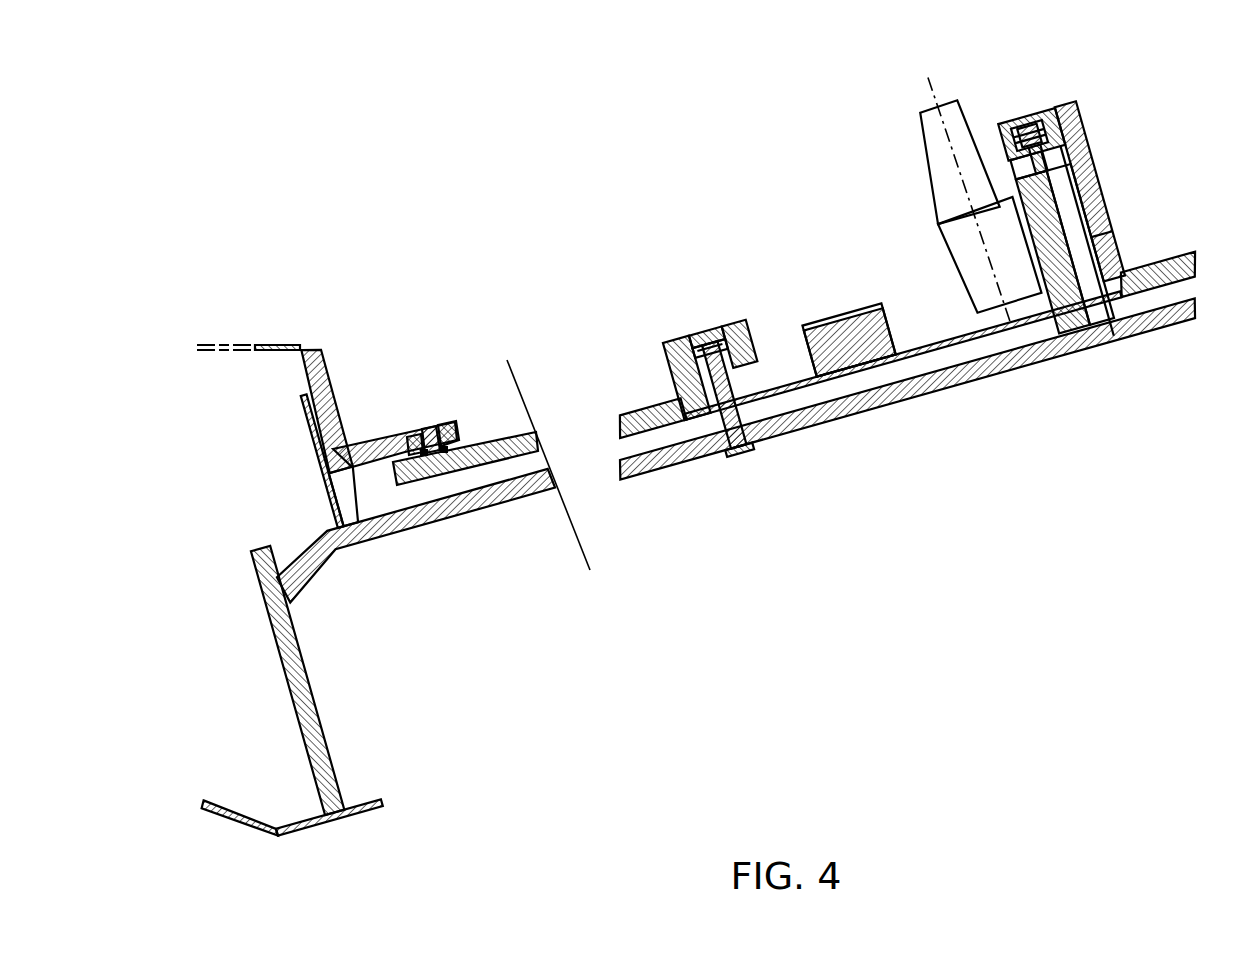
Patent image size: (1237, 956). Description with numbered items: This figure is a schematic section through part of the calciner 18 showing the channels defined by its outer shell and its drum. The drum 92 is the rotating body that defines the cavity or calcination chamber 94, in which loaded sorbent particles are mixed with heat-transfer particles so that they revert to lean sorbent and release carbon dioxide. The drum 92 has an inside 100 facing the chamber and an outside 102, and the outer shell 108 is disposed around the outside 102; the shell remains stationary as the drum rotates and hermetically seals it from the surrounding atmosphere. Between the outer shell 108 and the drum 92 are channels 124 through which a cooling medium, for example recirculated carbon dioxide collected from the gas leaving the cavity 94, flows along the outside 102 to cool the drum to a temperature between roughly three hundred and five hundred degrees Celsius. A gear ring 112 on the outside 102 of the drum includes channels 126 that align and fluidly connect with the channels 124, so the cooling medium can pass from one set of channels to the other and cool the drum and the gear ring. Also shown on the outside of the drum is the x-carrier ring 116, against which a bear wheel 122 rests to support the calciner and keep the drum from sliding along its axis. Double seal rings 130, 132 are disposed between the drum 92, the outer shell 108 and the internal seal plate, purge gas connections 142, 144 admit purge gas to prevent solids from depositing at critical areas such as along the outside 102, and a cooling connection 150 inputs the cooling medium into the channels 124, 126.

The calciner 18 is at (366, 106).
The drum 92 is at (320, 532).
The cavity/calcination chamber 94 is at (398, 720).
The inside 100 is at (405, 533).
The outside 102 is at (372, 520).
The outer shell/casing 108 is at (505, 430).
The gear ring 112 is at (843, 322).
The x-carrier ring 116 is at (1093, 243).
The bear wheel 122 is at (970, 237).
The channels 124 is at (493, 477).
The channels 126 is at (873, 380).
The double seal ring 130 is at (1085, 156).
The double seal ring 132 is at (707, 340).
The purge gas connection 142 is at (1104, 168).
The purge gas connection 144 is at (663, 382).
The cooling connection 150 is at (691, 349).